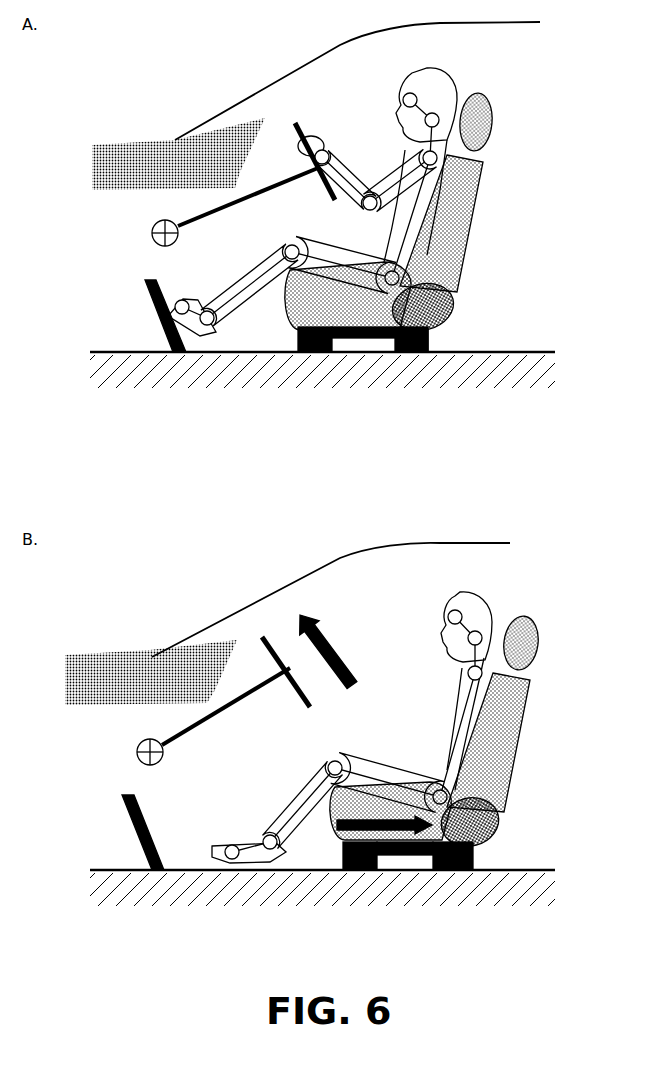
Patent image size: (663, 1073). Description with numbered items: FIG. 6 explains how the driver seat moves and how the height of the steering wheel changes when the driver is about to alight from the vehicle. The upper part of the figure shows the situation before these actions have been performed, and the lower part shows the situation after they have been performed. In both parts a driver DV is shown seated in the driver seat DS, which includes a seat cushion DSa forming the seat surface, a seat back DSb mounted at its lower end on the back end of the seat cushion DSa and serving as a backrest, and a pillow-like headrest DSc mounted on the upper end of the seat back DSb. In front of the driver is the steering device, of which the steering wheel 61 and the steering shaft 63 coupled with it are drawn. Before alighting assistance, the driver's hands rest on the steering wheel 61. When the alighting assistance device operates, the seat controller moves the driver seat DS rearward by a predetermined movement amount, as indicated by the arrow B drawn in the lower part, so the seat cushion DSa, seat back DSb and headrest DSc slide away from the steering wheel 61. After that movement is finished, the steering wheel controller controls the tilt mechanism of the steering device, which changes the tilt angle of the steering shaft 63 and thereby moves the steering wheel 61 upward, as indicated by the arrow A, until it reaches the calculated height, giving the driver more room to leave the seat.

The steering wheel 61 is at (298, 118).
The steering shaft 63 is at (226, 212).
The driver DV is at (443, 73).
The driver seat DS is at (448, 523).
The seat cushion DSa is at (357, 315).
The seat back DSb is at (455, 246).
The headrest DSc is at (490, 121).
The arrow A is at (327, 634).
The arrow B is at (400, 838).